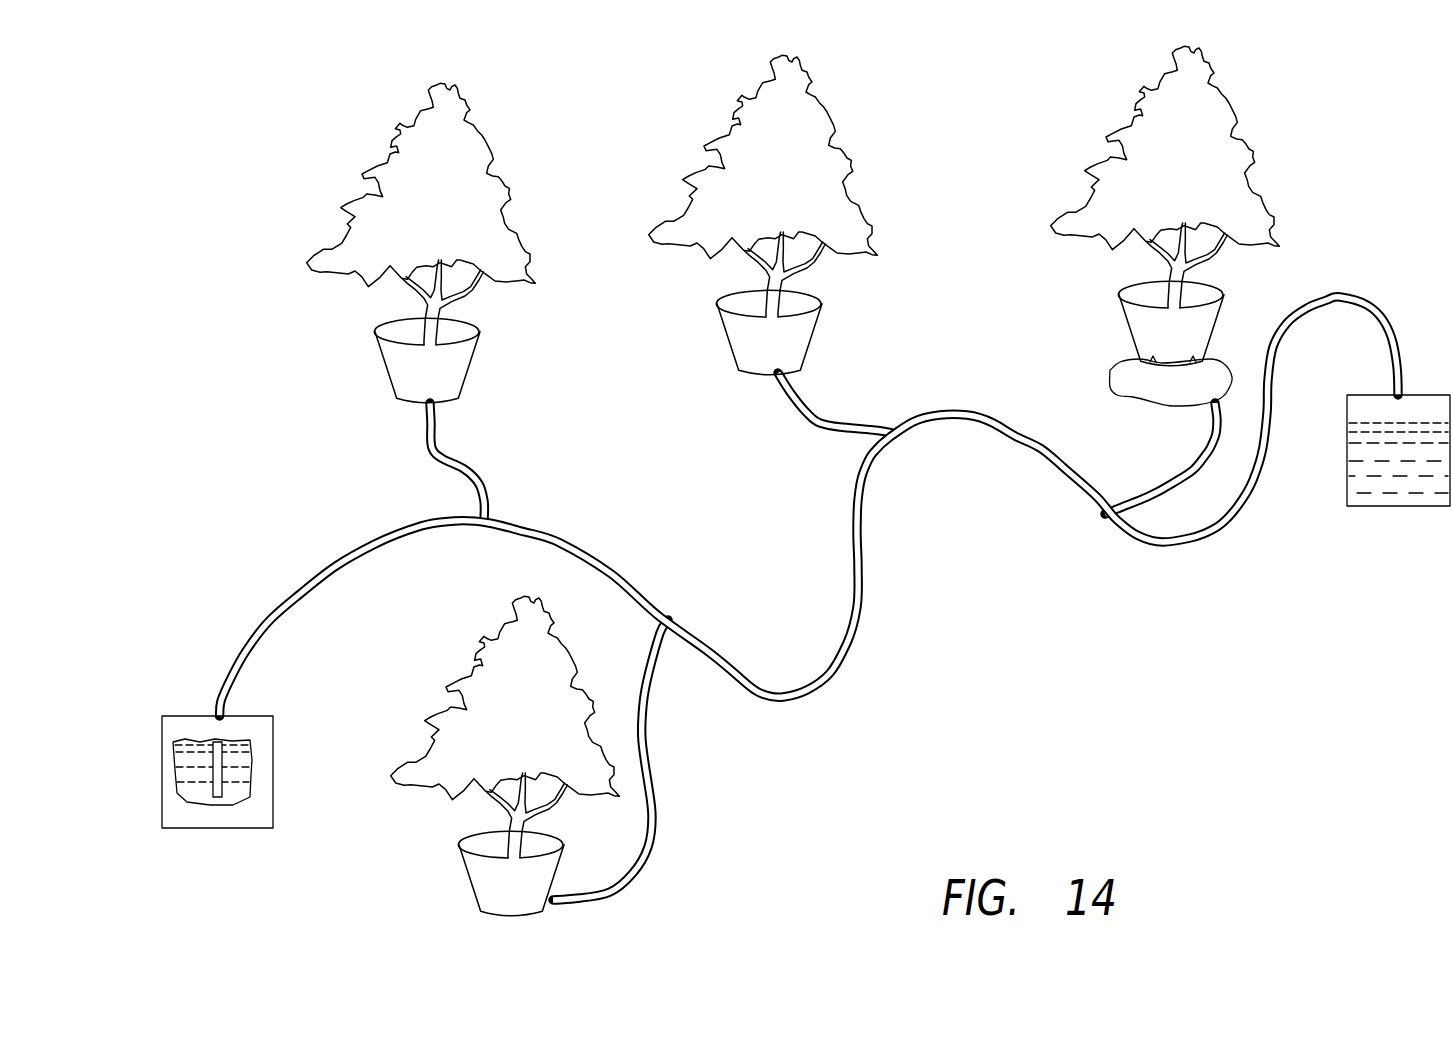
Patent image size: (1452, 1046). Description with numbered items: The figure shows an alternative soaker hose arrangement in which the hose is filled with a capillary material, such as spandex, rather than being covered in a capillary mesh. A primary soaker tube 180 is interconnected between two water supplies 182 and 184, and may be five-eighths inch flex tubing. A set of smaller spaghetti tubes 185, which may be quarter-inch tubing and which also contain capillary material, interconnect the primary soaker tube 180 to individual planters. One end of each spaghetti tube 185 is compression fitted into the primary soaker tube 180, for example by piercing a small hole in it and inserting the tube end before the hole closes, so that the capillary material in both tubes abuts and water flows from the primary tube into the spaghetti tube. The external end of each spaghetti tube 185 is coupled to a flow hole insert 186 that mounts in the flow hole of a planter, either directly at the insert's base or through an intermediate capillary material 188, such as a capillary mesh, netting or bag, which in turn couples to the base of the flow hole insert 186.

The primary soaker tube 180 is at (1167, 543).
The water supply 182 is at (267, 782).
The water supply 184 is at (1347, 437).
The spaghetti tubes 185 is at (461, 464).
The flow hole insert 186 is at (421, 410).
The intermediate capillary material 188 is at (1157, 390).